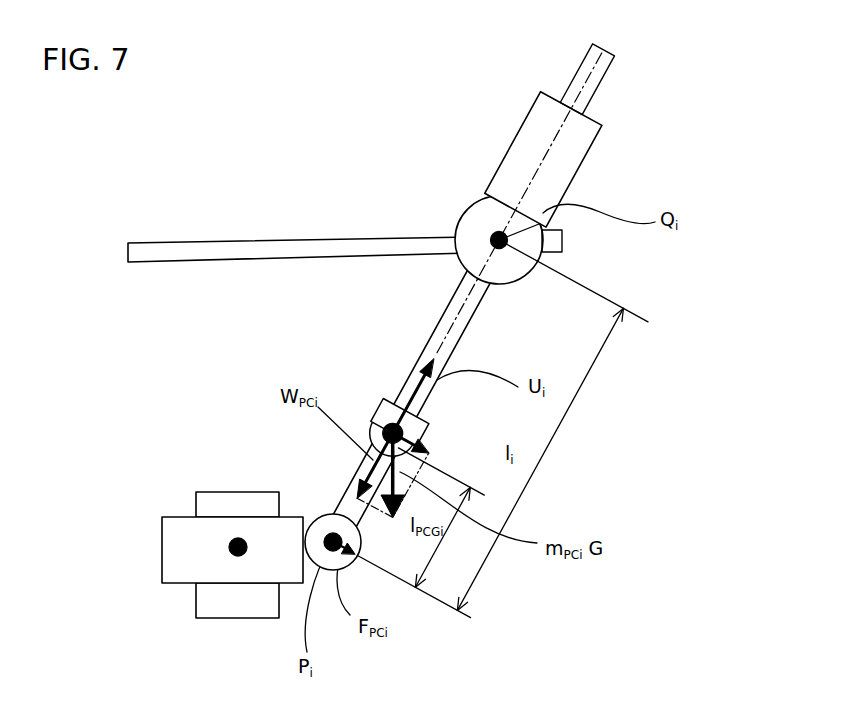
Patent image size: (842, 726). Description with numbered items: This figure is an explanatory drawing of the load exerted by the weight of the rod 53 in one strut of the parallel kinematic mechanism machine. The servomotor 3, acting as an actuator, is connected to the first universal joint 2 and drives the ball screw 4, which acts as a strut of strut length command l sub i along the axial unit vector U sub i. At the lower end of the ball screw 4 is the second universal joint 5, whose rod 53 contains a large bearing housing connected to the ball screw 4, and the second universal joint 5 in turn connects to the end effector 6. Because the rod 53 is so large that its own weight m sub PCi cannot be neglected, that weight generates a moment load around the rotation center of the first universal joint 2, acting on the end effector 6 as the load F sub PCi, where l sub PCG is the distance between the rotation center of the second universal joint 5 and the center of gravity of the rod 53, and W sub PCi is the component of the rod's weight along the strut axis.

The first universal joint 2 is at (472, 213).
The servomotor 3 is at (543, 117).
The ball screw 4 is at (437, 335).
The second universal joint 5 is at (330, 517).
The end effector 6 is at (225, 520).
The rod 53 is at (381, 400).